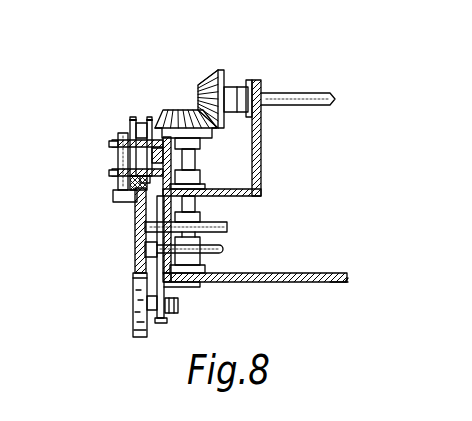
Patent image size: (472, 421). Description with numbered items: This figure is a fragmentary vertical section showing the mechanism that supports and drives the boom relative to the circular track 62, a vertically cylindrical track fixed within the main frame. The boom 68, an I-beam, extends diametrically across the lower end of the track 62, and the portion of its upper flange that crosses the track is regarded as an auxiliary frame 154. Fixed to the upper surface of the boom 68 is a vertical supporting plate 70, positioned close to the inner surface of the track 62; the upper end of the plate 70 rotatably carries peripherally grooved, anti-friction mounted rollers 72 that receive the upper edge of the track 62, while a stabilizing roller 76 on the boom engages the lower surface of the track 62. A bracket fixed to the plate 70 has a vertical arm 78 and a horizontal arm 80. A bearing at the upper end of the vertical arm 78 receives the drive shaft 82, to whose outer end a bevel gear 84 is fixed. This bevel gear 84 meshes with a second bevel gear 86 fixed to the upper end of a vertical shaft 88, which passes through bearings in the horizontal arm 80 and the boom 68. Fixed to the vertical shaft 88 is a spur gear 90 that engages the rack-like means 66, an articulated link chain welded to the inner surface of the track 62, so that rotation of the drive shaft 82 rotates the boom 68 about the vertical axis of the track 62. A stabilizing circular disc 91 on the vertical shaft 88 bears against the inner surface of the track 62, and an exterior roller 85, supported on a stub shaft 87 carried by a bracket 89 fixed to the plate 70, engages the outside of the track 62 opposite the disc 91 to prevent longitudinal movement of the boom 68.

The circular track 62 is at (133, 240).
The rack-like means 66 is at (143, 258).
The boom 68 is at (278, 273).
The supporting members or plates 70 is at (143, 198).
The rollers 72 is at (128, 122).
The stabilizing roller 76 is at (137, 309).
The vertical arm 78 is at (262, 149).
The horizontal arm 80 is at (240, 196).
The drive shaft 82 is at (287, 96).
The bevel gear 84 is at (208, 72).
The exterior roller 85 is at (110, 198).
The bevel gear 86 is at (182, 109).
The stub shaft 87 is at (119, 182).
The vertical shaft 88 is at (186, 163).
The bracket 89 is at (113, 172).
The spur gear 90 is at (223, 250).
The stabilizing circular disc 91 is at (228, 228).
The auxiliary frame 154 is at (336, 273).